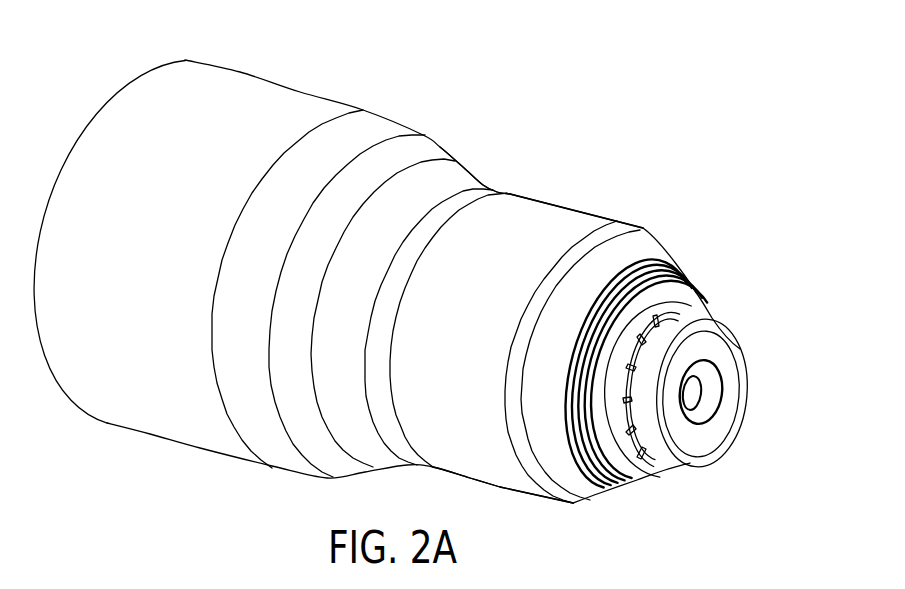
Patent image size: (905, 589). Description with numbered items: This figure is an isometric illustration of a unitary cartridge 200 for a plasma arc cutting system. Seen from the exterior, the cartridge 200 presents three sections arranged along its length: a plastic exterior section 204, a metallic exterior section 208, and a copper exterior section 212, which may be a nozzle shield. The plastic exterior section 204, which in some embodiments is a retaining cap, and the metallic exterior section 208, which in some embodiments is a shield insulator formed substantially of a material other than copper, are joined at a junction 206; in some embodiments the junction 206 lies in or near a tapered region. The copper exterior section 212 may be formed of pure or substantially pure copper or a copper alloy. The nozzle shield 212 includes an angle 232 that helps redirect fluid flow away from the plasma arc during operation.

The unitary cartridge 200 is at (549, 86).
The plastic exterior section 204 is at (240, 72).
The junction 206 is at (487, 165).
The metallic exterior section 208 is at (553, 203).
The copper exterior section 212 is at (705, 297).
The angle 232 is at (658, 477).